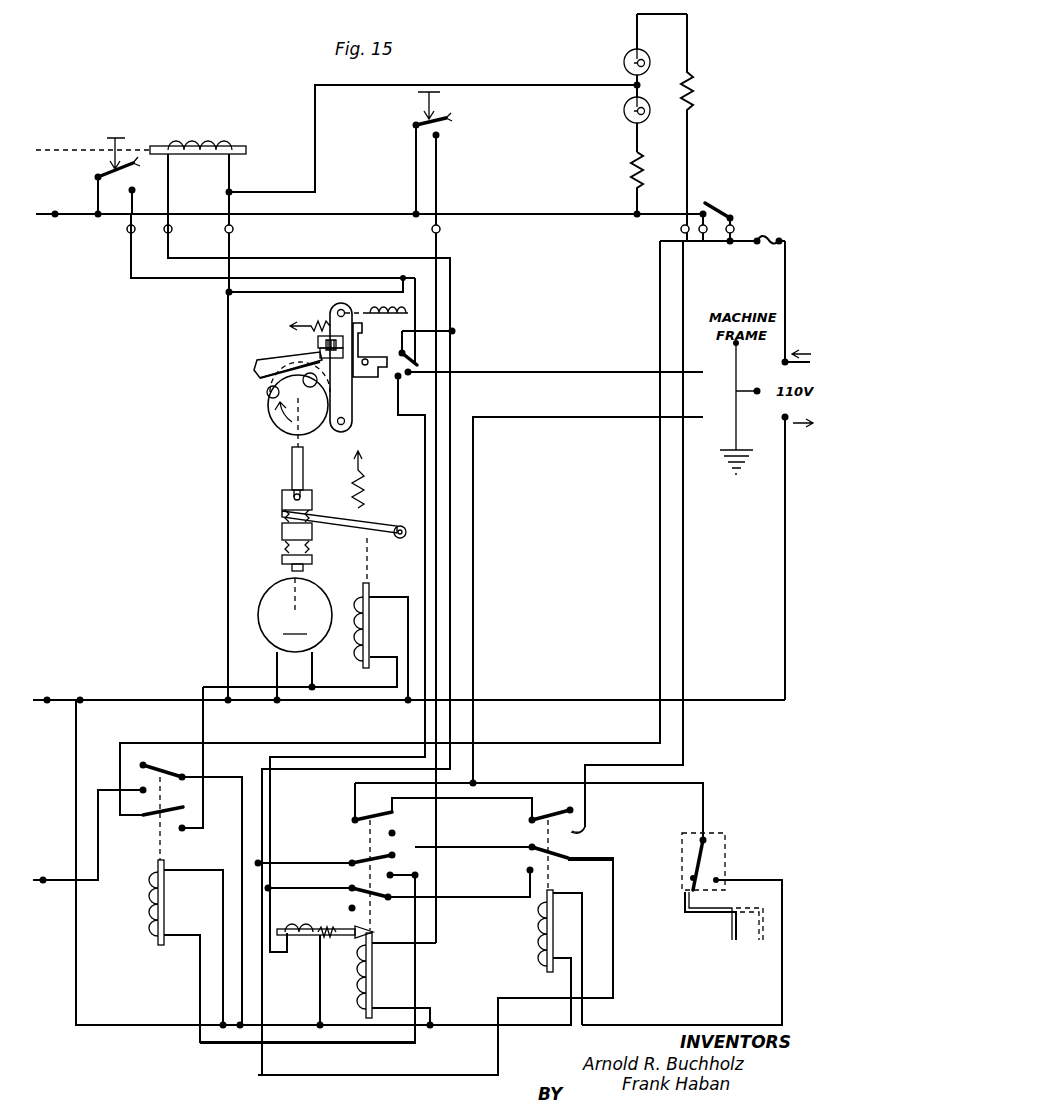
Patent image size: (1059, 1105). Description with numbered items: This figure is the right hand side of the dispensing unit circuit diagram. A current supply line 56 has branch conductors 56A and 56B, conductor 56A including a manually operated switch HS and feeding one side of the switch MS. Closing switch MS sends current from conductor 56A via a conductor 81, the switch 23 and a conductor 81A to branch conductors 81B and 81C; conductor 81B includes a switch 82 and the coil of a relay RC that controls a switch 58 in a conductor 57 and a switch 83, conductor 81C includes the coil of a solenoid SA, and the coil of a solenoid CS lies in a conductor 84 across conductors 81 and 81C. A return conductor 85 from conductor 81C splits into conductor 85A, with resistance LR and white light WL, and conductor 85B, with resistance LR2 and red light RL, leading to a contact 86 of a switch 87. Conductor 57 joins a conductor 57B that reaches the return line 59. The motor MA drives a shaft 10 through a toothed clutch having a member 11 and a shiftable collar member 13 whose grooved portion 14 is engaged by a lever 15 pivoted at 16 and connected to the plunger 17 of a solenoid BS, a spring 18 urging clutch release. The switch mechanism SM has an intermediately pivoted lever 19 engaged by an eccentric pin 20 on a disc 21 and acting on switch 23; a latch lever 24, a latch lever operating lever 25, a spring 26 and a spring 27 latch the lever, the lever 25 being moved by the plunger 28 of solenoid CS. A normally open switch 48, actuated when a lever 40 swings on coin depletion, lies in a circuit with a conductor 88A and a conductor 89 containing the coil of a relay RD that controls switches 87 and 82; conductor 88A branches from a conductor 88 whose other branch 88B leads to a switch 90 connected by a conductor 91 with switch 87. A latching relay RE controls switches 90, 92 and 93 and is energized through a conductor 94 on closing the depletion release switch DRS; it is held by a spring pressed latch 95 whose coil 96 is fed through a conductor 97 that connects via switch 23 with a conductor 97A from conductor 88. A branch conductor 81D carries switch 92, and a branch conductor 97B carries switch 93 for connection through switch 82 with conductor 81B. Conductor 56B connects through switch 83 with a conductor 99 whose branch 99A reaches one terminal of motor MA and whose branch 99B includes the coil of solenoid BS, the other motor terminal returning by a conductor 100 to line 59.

The branch conductor 56A is at (548, 214).
The branch conductor 56B is at (660, 282).
The current supply line 56 is at (785, 268).
The switch MS is at (130, 166).
The solenoid SA is at (233, 150).
The return conductor 85 is at (544, 86).
The branch conductor 85A is at (637, 141).
The branch conductor 85B is at (637, 45).
The depletion release switch DRS is at (452, 120).
The red light RL is at (625, 69).
The white light WL is at (624, 109).
The resistance LR is at (631, 168).
The resistance LR2 is at (694, 96).
The manually operated switch HS is at (718, 211).
The conductor 81 is at (170, 279).
The conductor 81A is at (446, 333).
The branch conductor 81B is at (447, 373).
The branch conductor 81C is at (455, 273).
The branch conductor 81D is at (327, 863).
The conductor 84 is at (276, 286).
The plunger 28 is at (427, 320).
The solenoid CS is at (388, 308).
The switch 23 is at (400, 353).
The conductor 97A is at (621, 372).
The conductor 94 is at (435, 403).
The conductor 97 is at (424, 440).
The conductor 88 is at (474, 503).
The latch lever operating lever 25 is at (352, 408).
The spring 27 is at (322, 322).
The spring 26 is at (318, 341).
The latch lever 24 is at (320, 354).
The switch mechanism SM is at (356, 390).
The intermediately pivoted lever 19 is at (273, 372).
The cam member or eccentrically mounted pin 20 is at (267, 408).
The disc 21 is at (283, 428).
The motor driven shaft 10 is at (304, 471).
The grooved portion 14 is at (282, 516).
The shiftable collar member 13 is at (282, 536).
The clutch member 11 is at (282, 564).
The lever 15 is at (347, 520).
The pivot 16 is at (398, 526).
The spring 18 is at (362, 487).
The plunger 17 is at (363, 587).
The solenoid BS is at (371, 641).
The branch conductor 99B is at (389, 598).
The motor MA is at (295, 615).
The conductor 100 is at (278, 679).
The branch conductor 99A is at (315, 671).
The conductor 99 is at (264, 699).
The return line conductor 59 is at (625, 700).
The switch 58 is at (179, 772).
The switch 83 is at (141, 817).
The conductor 57 is at (98, 880).
The relay RC is at (155, 919).
The conductor 57B is at (150, 1025).
The branch conductor 88B is at (352, 804).
The conductor 88A is at (704, 803).
The switch 90 is at (400, 818).
The conductor 91 is at (464, 798).
The switch 87 is at (561, 809).
The contact 86 is at (588, 834).
The normally open switch 48 is at (692, 863).
The switch 92 is at (369, 861).
The switch 82 is at (531, 852).
The branch conductor 97B is at (333, 888).
The switch 93 is at (348, 899).
The coil 96 is at (313, 929).
The spring pressed latch 95 is at (334, 980).
The latching type relay RE is at (373, 986).
The relay RD is at (545, 923).
The conductor 89 is at (661, 1025).
The lever 40 is at (734, 924).